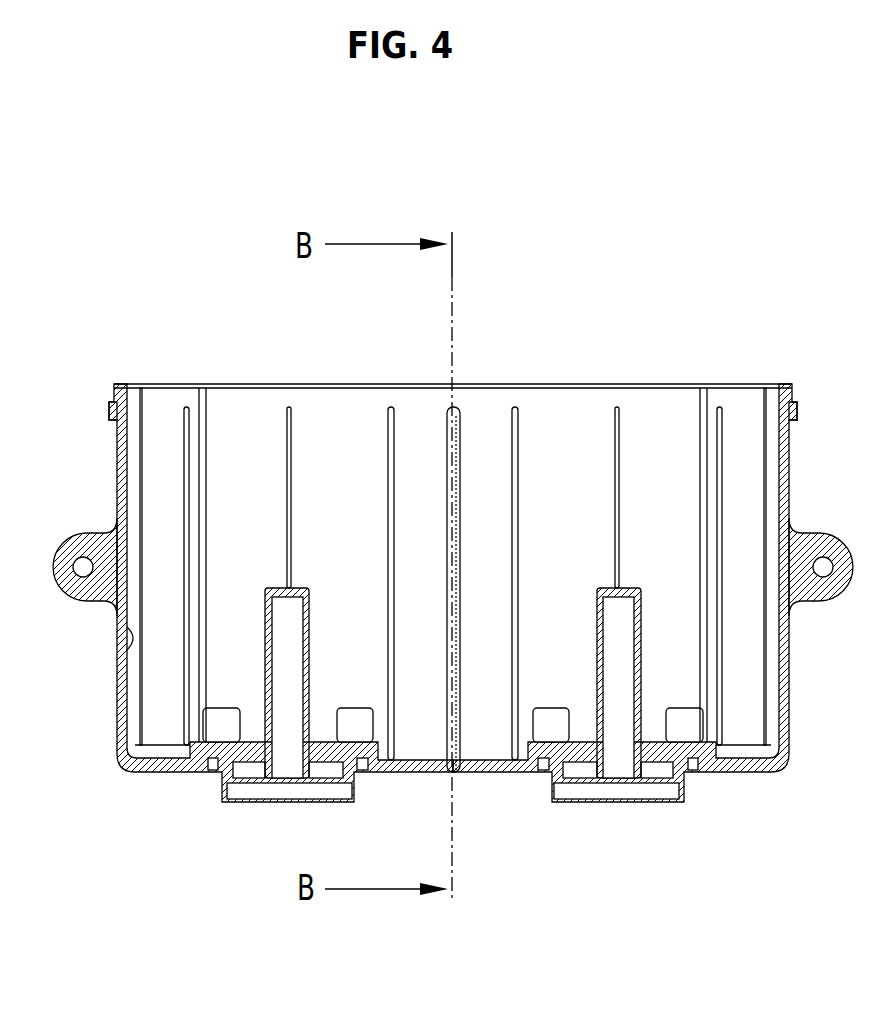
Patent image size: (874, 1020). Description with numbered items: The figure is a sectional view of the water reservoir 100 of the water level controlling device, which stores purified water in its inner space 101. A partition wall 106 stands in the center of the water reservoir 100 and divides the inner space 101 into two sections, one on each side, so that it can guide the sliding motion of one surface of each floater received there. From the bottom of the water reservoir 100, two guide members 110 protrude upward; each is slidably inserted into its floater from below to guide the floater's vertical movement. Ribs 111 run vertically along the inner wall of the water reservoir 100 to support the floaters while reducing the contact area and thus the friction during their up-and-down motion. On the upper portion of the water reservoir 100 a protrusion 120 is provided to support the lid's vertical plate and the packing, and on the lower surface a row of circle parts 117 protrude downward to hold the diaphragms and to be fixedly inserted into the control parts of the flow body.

The water reservoir 100 is at (110, 237).
The inner space 101 is at (250, 465).
The partition wall 106 is at (468, 463).
The guide member 110 is at (453, 723).
The rib 111 is at (185, 427).
The circle part 117 is at (453, 832).
The protrusion 120 is at (111, 404).